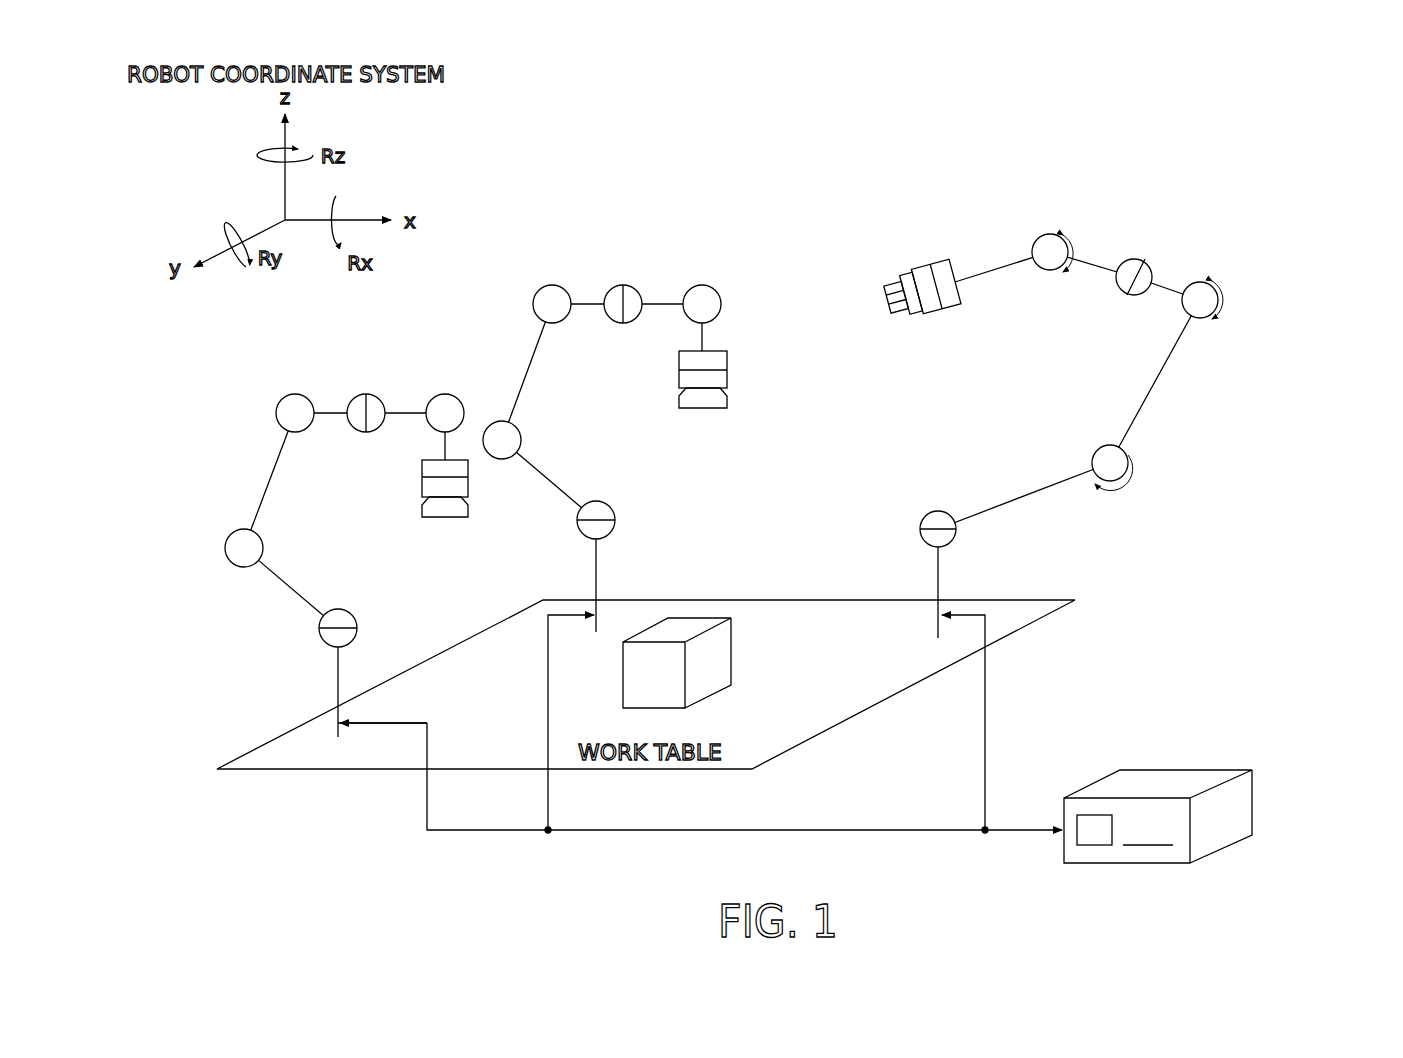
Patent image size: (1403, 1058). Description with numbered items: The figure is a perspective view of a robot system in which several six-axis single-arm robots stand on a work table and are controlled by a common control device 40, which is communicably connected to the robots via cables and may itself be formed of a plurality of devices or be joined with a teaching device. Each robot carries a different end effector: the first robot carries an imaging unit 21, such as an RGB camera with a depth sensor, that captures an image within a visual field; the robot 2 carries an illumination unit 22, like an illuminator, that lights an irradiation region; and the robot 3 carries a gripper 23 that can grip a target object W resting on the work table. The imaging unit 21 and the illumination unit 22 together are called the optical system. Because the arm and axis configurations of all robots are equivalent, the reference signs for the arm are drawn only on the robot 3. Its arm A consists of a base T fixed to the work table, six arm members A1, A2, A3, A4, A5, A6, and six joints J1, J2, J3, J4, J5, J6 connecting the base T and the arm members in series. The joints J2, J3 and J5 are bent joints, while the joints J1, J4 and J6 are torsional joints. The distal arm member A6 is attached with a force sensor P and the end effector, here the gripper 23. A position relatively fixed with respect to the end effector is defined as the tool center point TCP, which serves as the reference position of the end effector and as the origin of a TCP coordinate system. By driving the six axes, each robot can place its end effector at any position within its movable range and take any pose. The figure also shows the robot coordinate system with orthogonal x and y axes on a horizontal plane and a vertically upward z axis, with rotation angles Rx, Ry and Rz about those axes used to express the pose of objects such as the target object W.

The robot 2 is at (289, 565).
The robot 3 is at (892, 458).
The imaging unit 21 is at (678, 400).
The illumination unit 22 is at (432, 520).
The gripper 23 is at (896, 297).
The control device 40 is at (1197, 775).
The arm A is at (1020, 349).
The arm member A1 is at (1025, 492).
The arm member A2 is at (1158, 397).
The arm member A3 is at (1175, 285).
The arm member A4 is at (1100, 265).
The arm member A5 is at (1005, 262).
The arm member A6 is at (936, 286).
The joint J1 is at (960, 540).
The joint J2 is at (1102, 445).
The joint J3 is at (1180, 309).
The joint J4 is at (1143, 268).
The joint J5 is at (1048, 235).
The joint J6 is at (911, 293).
The force sensor P is at (936, 286).
The base T is at (930, 585).
The tool center point TCP is at (896, 297).
The target object W is at (690, 625).